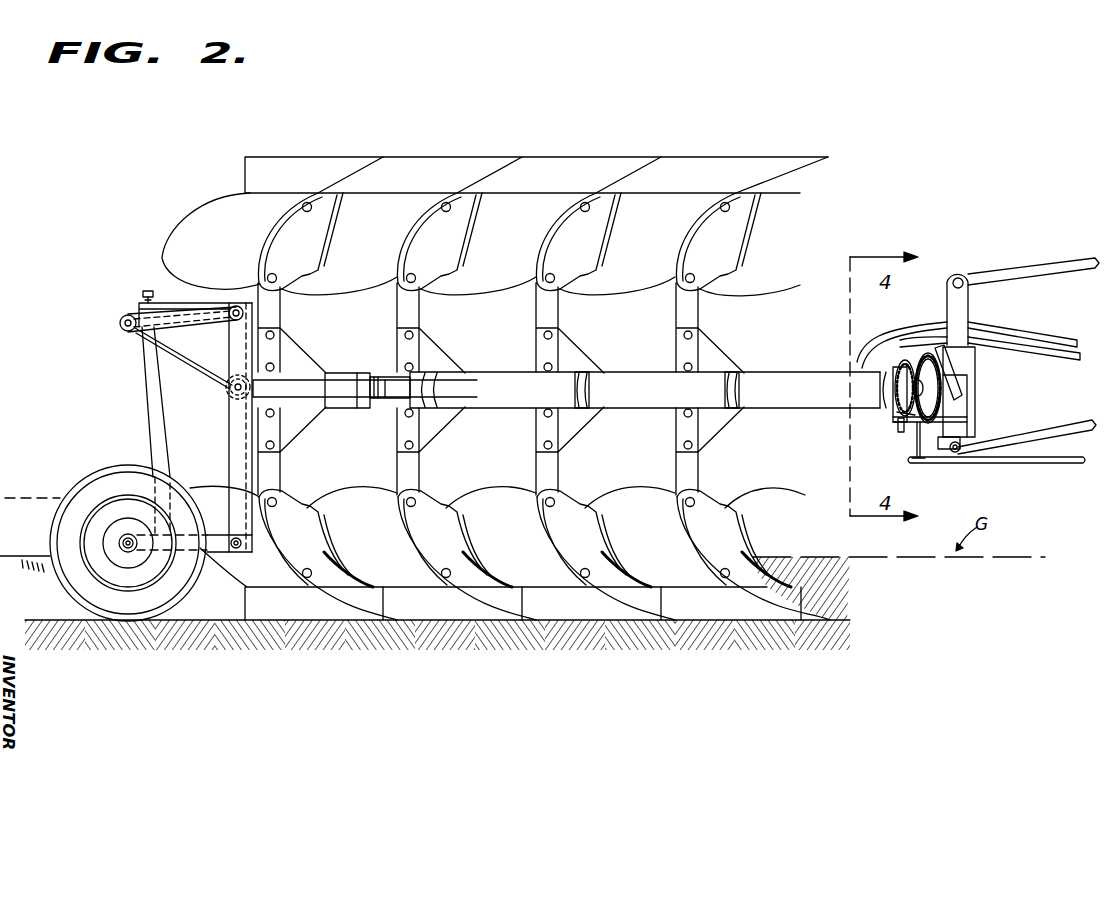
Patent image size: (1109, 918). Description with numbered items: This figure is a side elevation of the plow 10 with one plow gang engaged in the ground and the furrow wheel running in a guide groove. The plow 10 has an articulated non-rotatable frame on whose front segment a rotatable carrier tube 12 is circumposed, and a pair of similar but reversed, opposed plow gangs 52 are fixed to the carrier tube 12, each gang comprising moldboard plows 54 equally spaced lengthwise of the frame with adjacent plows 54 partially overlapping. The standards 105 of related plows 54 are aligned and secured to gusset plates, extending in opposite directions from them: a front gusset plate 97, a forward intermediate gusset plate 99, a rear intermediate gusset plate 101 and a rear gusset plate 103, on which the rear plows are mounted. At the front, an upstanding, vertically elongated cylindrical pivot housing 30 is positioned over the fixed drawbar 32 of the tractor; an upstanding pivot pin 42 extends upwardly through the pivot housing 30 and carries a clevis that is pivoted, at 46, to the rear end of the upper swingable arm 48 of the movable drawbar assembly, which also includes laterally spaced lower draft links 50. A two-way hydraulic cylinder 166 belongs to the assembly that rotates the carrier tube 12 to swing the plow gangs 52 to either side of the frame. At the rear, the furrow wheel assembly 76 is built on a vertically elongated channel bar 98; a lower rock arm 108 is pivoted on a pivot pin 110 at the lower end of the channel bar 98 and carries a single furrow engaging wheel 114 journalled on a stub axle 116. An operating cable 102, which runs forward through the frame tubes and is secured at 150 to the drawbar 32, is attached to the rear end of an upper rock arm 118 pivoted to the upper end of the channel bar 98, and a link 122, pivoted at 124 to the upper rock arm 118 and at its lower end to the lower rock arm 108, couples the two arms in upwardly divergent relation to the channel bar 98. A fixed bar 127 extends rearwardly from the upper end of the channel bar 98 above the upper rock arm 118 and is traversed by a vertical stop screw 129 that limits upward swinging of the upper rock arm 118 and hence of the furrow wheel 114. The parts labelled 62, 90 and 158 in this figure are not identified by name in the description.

The plow 10 is at (760, 365).
The carrier tube 12 is at (652, 412).
The pivot housing 30 is at (976, 365).
The fixed drawbar 32 is at (1028, 470).
The pivot pin 42 is at (392, 378).
The pivot 46 is at (960, 278).
The upper swingable arm 48 is at (1045, 265).
The lower draft links 50 is at (1058, 436).
The plow gangs 52 is at (760, 222).
The moldboard plows 54 is at (572, 286).
The front beam section 62 is at (456, 353).
The furrow wheel assembly 76 is at (477, 446).
The bracket 90 is at (296, 368).
The front gusset plate 97 is at (722, 437).
The channel bar 98 is at (228, 413).
The forward intermediate gusset plate 99 is at (566, 441).
The rear intermediate gusset plate 101 is at (437, 427).
The operating cable 102 is at (188, 368).
The rear gusset plate 103 is at (305, 427).
The standards 105 is at (403, 304).
The lower rock arm 108 is at (190, 575).
The pivot pin 110 is at (238, 548).
The furrow engaging wheel 114 is at (92, 486).
The stub axle 116 is at (120, 548).
The upper rock arm 118 is at (183, 321).
The link 122 is at (146, 411).
The pivot 124 is at (130, 332).
The fixed bar 127 is at (194, 305).
The stop screw 129 is at (150, 293).
The cable securement 150 is at (946, 462).
The sprocket gear 158 is at (893, 418).
The two-way hydraulic cylinder 166 is at (886, 348).